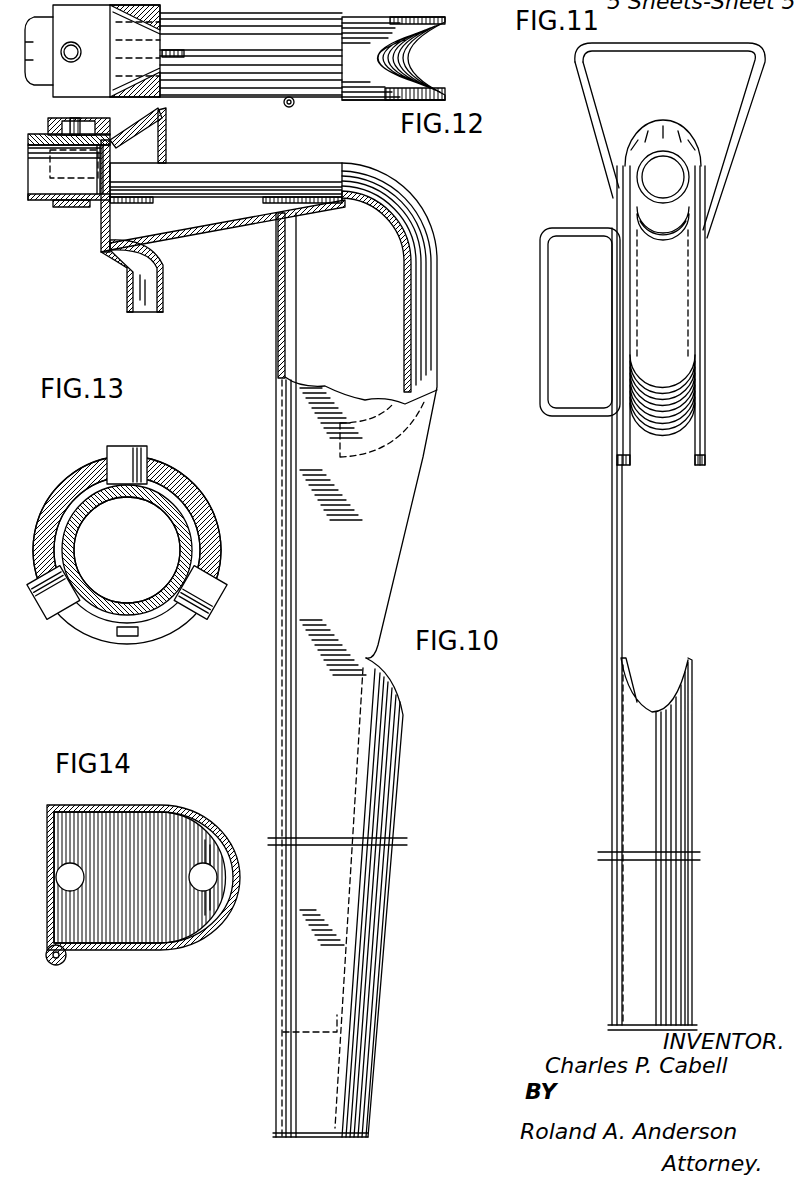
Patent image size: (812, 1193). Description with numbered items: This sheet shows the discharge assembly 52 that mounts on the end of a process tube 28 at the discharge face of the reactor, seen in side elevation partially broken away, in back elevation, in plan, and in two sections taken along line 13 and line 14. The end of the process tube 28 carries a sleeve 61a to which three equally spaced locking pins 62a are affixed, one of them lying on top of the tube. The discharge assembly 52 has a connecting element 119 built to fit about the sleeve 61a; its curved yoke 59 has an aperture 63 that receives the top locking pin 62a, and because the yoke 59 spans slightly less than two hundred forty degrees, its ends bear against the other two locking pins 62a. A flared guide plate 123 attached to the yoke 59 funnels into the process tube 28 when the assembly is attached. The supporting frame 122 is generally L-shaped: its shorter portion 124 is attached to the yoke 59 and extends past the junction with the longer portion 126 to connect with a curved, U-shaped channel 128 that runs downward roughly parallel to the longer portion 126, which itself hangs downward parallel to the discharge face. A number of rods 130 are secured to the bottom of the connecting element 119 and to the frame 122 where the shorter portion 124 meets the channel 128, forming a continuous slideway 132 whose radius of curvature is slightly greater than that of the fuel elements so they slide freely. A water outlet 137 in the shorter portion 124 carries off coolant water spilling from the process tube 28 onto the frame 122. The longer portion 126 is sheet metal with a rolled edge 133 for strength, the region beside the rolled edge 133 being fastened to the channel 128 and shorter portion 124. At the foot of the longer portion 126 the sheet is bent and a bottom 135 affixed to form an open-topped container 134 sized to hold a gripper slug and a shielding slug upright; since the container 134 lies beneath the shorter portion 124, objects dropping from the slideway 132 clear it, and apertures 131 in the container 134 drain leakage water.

In FIG. 10, the section line 13- 13 is at (82, 110).
In FIG. 10, the section line 14- 14 is at (410, 1068).
In FIG. 10, the process tube 28 is at (36, 200).
In FIG. 13, the process tube 28 is at (100, 612).
In FIG. 10, the discharge assembly 52 is at (424, 470).
In FIG. 11, the discharge assembly 52 is at (652, 499).
In FIG. 10, the curved yoke 59 is at (104, 130).
In FIG. 11, the curved yoke 59 is at (706, 155).
In FIG. 13, the curved yoke 59 is at (205, 521).
In FIG. 10, the sleeve 61a is at (46, 134).
In FIG. 13, the sleeve 61a is at (60, 502).
In FIG. 12, the locking pins 62a is at (64, 47).
In FIG. 10, the locking pins 62a is at (74, 164).
In FIG. 13, the locking pins 62a is at (118, 449).
In FIG. 12, the aperture 63 is at (78, 45).
In FIG. 10, the aperture 63 is at (75, 126).
In FIG. 13, the aperture 63 is at (148, 468).
In FIG. 12, the connecting element 119 is at (106, 51).
In FIG. 13, the connecting element 119 is at (208, 472).
In FIG. 12, the supporting frame 122 is at (326, 98).
In FIG. 10, the supporting frame 122 is at (392, 512).
In FIG. 11, the supporting frame 122 is at (629, 589).
In FIG. 12, the flared guide plate 123 is at (178, 45).
In FIG. 10, the flared guide plate 123 is at (166, 131).
In FIG. 11, the flared guide plate 123 is at (663, 120).
In FIG. 12, the shorter portion 124 is at (190, 97).
In FIG. 10, the shorter portion 124 is at (200, 238).
In FIG. 10, the longer portion 126 is at (275, 720).
In FIG. 11, the longer portion 126 is at (611, 541).
In FIG. 12, the U-shaped channel 128 is at (388, 98).
In FIG. 10, the U-shaped channel 128 is at (404, 300).
In FIG. 11, the U-shaped channel 128 is at (705, 240).
In FIG. 12, the rods 130 is at (283, 30).
In FIG. 10, the rods 130 is at (215, 183).
In FIG. 11, the rods 130 is at (696, 217).
In FIG. 13, the rods 130 is at (80, 574).
In FIG. 14, the apertures 131 is at (195, 868).
In FIG. 12, the slideway 132 is at (408, 54).
In FIG. 10, the slideway 132 is at (432, 290).
In FIG. 11, the slideway 132 is at (703, 194).
In FIG. 12, the rolled edge 133 is at (289, 108).
In FIG. 10, the rolled edge 133 is at (282, 696).
In FIG. 11, the rolled edge 133 is at (616, 720).
In FIG. 14, the rolled edge 133 is at (54, 963).
In FIG. 10, the container 134 is at (384, 951).
In FIG. 11, the container 134 is at (694, 900).
In FIG. 14, the container 134 is at (215, 938).
In FIG. 10, the bottom 135 is at (276, 1138).
In FIG. 11, the bottom 135 is at (615, 1028).
In FIG. 14, the bottom 135 is at (150, 893).
In FIG. 10, the water outlet 137 is at (165, 301).